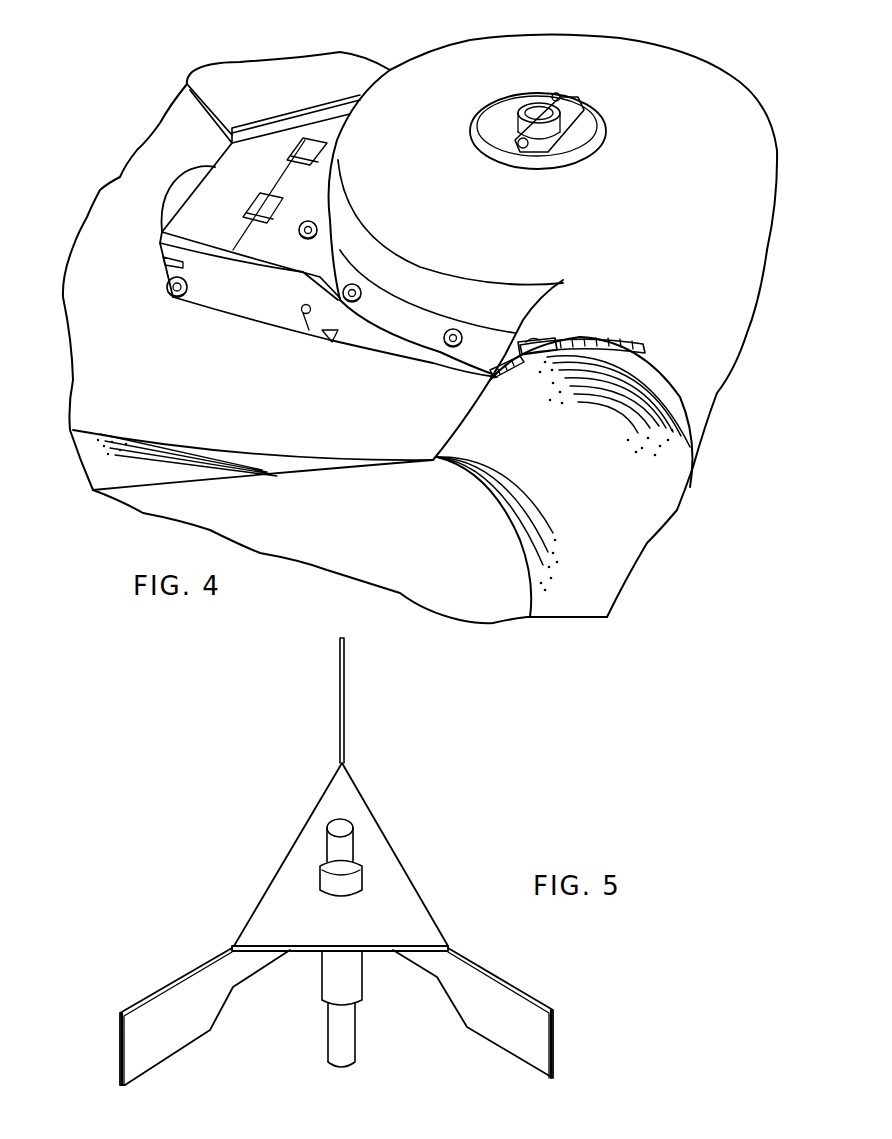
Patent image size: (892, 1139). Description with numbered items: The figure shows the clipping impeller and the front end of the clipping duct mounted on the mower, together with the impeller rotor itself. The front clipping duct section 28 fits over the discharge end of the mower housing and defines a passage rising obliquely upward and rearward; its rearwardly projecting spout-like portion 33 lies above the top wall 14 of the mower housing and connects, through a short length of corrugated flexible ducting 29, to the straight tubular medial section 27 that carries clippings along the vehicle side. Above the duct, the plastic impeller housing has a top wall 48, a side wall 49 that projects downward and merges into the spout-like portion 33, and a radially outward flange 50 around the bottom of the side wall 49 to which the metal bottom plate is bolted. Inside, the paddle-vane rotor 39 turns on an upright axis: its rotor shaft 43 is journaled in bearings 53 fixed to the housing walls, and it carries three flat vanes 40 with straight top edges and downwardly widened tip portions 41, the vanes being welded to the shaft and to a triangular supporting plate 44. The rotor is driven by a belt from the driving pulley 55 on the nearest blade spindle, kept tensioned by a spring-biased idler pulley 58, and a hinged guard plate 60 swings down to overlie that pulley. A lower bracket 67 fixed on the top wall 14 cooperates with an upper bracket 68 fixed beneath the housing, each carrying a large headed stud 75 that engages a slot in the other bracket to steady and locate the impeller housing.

In FIG. 4, the top wall 14 is at (343, 422).
In FIG. 4, the medial section 27 is at (478, 610).
In FIG. 4, the front clipping duct section 28 is at (710, 440).
In FIG. 4, the corrugated flexible ducting 29 is at (647, 543).
In FIG. 4, the spout-like portion 33 is at (703, 404).
In FIG. 4, the top wall 48 is at (467, 57).
In FIG. 4, the side wall 49 is at (423, 300).
In FIG. 4, the flange 50 is at (383, 322).
In FIG. 4, the bearings 53 is at (570, 125).
In FIG. 4, the driving pulley 55 is at (177, 197).
In FIG. 4, the idler pulley 58 is at (560, 47).
In FIG. 4, the guard plate 60 is at (235, 158).
In FIG. 4, the lower bracket 67 is at (233, 313).
In FIG. 4, the upper bracket 68 is at (256, 302).
In FIG. 4, the large headed stud 75 is at (168, 291).
In FIG. 5, the paddle-vane rotor 39 is at (387, 818).
In FIG. 5, the vanes 40 is at (345, 691).
In FIG. 5, the tip portions 41 is at (137, 1070).
In FIG. 5, the rotor shaft 43 is at (330, 980).
In FIG. 5, the supporting plate 44 is at (398, 877).